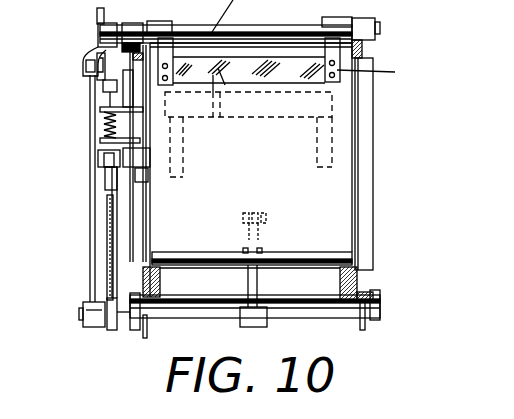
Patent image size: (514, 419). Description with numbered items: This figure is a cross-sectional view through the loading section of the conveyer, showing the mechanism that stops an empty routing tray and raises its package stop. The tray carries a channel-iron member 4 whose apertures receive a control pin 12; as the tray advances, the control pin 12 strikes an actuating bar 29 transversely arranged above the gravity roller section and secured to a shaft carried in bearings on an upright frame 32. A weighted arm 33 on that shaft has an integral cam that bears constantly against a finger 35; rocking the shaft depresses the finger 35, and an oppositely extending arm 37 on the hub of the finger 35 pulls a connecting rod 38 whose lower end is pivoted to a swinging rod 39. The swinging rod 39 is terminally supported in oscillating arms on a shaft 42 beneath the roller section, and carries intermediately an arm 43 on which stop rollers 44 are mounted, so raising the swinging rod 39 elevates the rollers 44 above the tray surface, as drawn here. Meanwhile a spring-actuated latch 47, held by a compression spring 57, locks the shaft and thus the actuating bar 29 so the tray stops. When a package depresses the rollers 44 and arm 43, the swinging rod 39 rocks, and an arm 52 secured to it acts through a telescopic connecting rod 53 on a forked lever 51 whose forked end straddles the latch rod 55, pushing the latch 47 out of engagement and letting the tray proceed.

The member 4 is at (305, 117).
The control pin 12 is at (232, 90).
The actuating bar 29 is at (378, 77).
The upright frame 32 is at (365, 50).
The weighted arm 33 is at (98, 16).
The finger 35 is at (102, 75).
The arm 37 is at (93, 38).
The connecting rod 38 is at (90, 140).
The swinging rod 39 is at (83, 318).
The shaft 42 is at (378, 298).
The arm 43 is at (257, 283).
The rollers 44 is at (265, 218).
The spring-actuated latch 47 is at (107, 90).
The forked lever 51 is at (106, 168).
The arm 52 is at (112, 330).
The telescopic connecting rod 53 is at (107, 213).
The latch rod 55 is at (110, 105).
The compression spring 57 is at (130, 130).